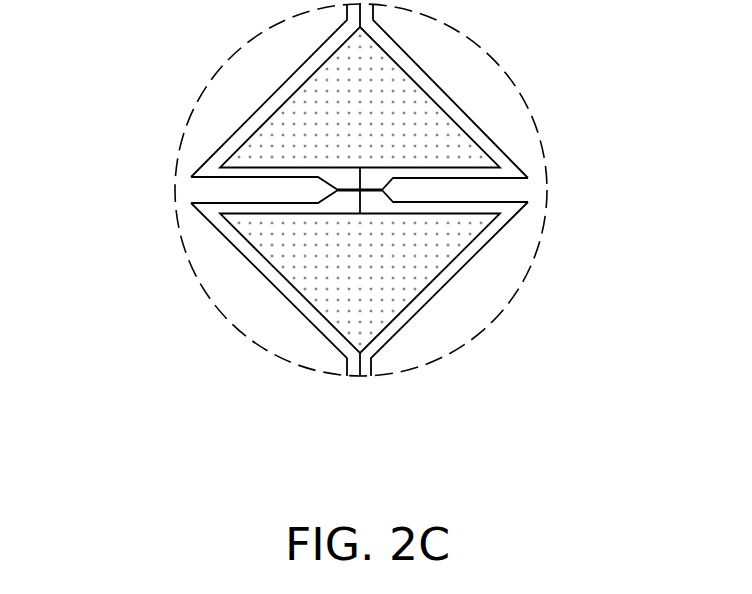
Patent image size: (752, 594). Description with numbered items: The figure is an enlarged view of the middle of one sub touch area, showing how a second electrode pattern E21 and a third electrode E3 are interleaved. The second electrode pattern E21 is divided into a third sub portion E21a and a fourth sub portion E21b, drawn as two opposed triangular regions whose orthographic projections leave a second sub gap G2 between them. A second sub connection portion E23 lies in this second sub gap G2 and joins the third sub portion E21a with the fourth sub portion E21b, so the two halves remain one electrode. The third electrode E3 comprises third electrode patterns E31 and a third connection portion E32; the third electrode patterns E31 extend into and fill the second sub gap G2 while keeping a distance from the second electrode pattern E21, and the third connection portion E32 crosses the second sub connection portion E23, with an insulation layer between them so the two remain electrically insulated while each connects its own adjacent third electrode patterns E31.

The third electrode E3 is at (280, 190).
The third connection portion E32 is at (348, 192).
The third electrode pattern E31 is at (237, 193).
The second electrode pattern E21 is at (463, 189).
The third sub portion E21a is at (447, 152).
The fourth sub portion E21b is at (442, 240).
The second sub connection portion E23 is at (357, 205).
The second sub gap G2 is at (378, 200).